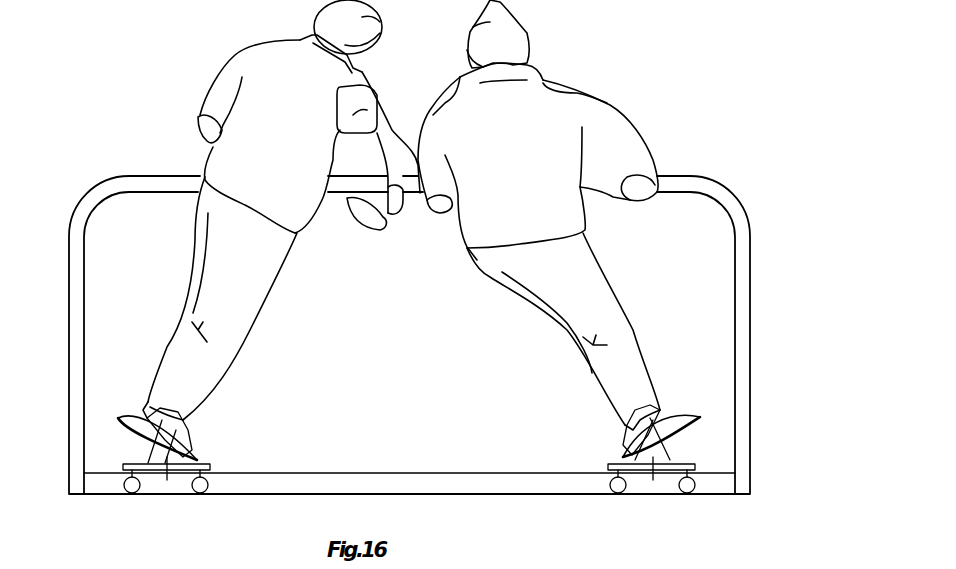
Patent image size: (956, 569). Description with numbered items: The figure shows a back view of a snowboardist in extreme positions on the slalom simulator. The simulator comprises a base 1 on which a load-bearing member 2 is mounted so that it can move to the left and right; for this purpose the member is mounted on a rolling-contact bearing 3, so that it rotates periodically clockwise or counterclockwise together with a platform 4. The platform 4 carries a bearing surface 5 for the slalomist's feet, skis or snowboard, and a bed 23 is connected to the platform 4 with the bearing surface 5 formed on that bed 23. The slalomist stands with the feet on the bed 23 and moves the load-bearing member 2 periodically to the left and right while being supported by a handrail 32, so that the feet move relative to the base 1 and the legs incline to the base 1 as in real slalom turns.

The base 1 is at (527, 481).
The load-bearing member 2 is at (608, 473).
The rolling-contact bearing 3 is at (617, 493).
The platform 4 is at (652, 462).
The bearing surface 5 is at (788, 495).
The bed 23 is at (680, 427).
The handrail 32 is at (740, 427).